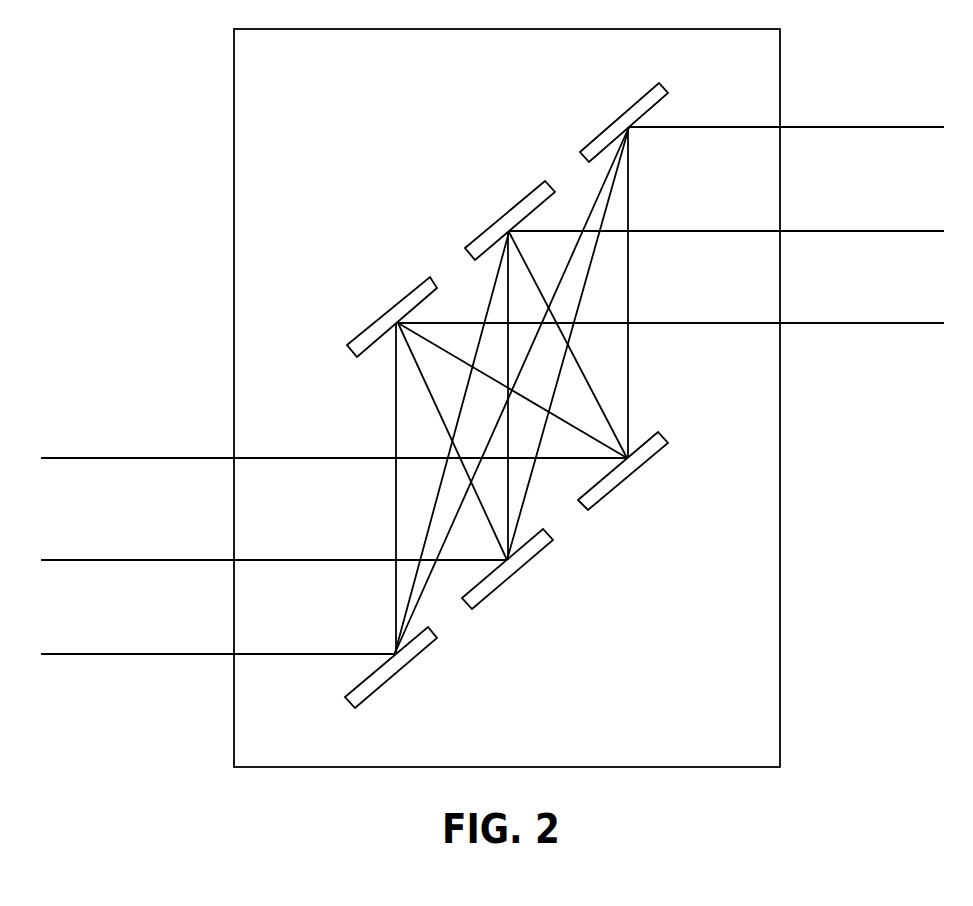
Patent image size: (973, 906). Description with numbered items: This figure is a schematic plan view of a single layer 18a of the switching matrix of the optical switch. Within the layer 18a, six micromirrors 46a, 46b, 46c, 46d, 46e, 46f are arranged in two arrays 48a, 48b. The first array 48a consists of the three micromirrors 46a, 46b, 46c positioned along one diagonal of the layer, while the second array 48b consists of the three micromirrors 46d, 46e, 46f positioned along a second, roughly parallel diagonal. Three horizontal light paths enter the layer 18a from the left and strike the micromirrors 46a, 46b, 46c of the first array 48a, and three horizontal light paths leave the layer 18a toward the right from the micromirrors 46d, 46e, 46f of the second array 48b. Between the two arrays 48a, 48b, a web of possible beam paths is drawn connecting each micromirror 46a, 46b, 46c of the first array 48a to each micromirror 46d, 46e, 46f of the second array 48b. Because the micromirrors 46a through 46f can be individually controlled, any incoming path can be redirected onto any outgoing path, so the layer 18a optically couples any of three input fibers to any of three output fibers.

The single layer 18a is at (660, 767).
The micromirror 46a is at (407, 662).
The micromirror 46b is at (530, 557).
The micromirror 46c is at (627, 478).
The micromirror 46d is at (405, 298).
The micromirror 46e is at (496, 226).
The micromirror 46f is at (626, 110).
The array 48a is at (615, 620).
The array 48b is at (390, 123).